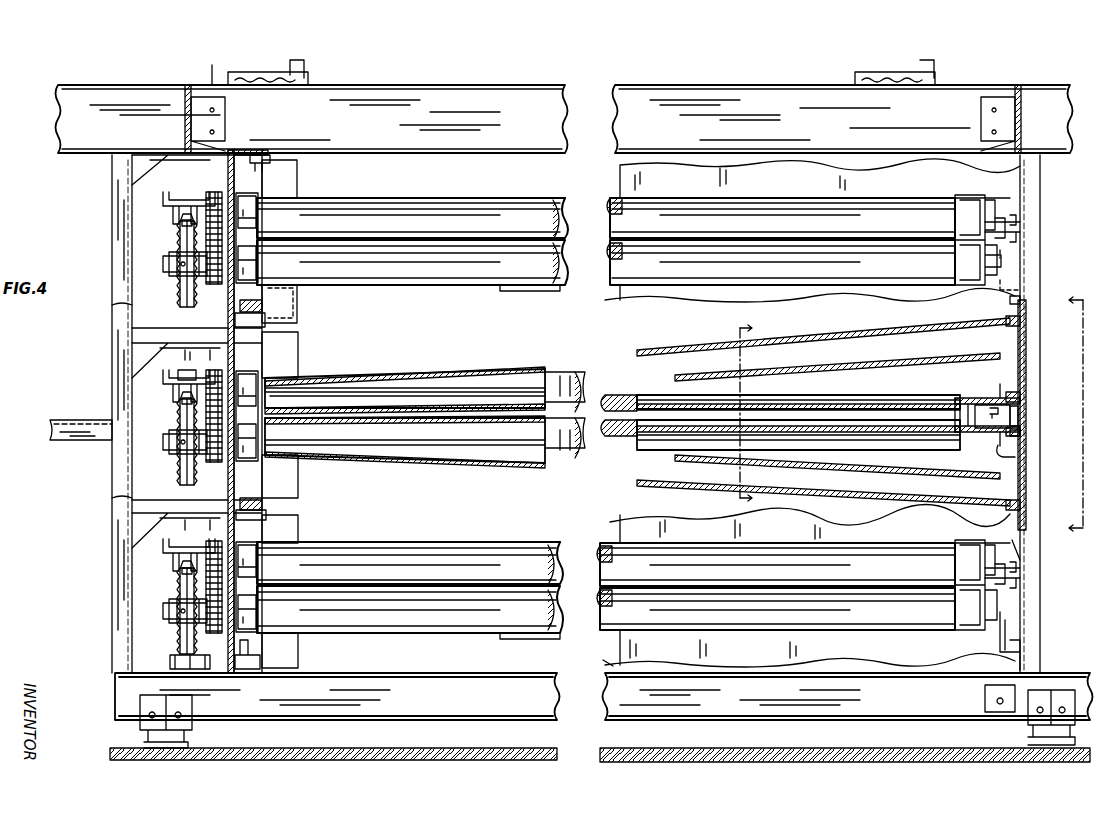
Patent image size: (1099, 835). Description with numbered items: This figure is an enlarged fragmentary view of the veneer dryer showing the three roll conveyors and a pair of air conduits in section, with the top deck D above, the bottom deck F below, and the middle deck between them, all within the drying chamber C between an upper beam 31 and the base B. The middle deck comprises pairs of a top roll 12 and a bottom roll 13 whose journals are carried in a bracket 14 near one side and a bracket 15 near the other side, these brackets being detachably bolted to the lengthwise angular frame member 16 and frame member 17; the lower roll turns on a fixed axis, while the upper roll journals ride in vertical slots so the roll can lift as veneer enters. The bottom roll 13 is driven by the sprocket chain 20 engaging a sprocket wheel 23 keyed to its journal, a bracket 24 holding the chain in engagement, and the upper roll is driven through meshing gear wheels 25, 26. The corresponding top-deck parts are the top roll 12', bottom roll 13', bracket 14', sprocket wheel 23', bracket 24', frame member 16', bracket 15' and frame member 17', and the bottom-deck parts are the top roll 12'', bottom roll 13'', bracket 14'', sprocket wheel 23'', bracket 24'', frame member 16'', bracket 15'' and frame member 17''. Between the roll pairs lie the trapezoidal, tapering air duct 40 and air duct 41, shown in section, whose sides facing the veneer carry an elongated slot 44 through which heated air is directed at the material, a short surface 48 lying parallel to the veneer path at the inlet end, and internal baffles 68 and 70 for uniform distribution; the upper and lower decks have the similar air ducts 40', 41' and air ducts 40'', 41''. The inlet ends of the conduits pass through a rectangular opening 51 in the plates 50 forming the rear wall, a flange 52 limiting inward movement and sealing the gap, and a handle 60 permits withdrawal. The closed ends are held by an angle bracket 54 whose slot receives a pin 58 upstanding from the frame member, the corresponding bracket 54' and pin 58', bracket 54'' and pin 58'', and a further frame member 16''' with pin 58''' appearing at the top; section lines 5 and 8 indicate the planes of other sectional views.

The top horizontal beam 31 is at (512, 82).
The bottom beam / base B is at (401, 725).
The drying chamber C is at (574, 495).
The conveyor D is at (435, 190).
The conveyor F is at (452, 536).
The top roll 12' is at (606, 207).
The bottom roll 13' is at (606, 252).
The air duct 40' is at (638, 180).
The air duct 41' is at (757, 298).
The angle bracket 54' is at (295, 241).
The bracket 14' is at (262, 238).
The sprocket wheel 23' is at (167, 260).
The bracket 24' is at (177, 201).
The frame member 16' is at (213, 240).
The pin 58' is at (250, 311).
The frame member 16''' is at (248, 138).
The pin 58''' is at (274, 149).
The air duct 40 is at (637, 352).
The air duct 41 is at (637, 479).
The elongated slot 44 is at (373, 387).
The top roll 12 is at (612, 390).
The bottom roll 13 is at (612, 440).
The angle bracket 54 is at (293, 415).
The pin 58 is at (280, 500).
The bracket 14 is at (251, 429).
The gear wheel 26 is at (222, 468).
The sprocket wheel 23 is at (178, 438).
The bracket 24 is at (179, 386).
The gear wheel 25 is at (198, 370).
The sprocket chain 20 is at (162, 220).
The frame member 16 is at (208, 421).
The top roll 12'' is at (606, 551).
The bottom roll 13'' is at (606, 598).
The air duct 40'' is at (633, 523).
The air duct 41'' is at (757, 648).
The angle bracket 54'' is at (303, 590).
The bracket 14'' is at (266, 587).
The sprocket wheel 23'' is at (173, 607).
The bracket 24'' is at (177, 555).
The pin 58'' is at (251, 651).
The frame member 16'' is at (253, 607).
The bracket 15' is at (974, 225).
The frame member 17' is at (1028, 229).
The plate 50 is at (1026, 288).
The rectangular opening 51 is at (1026, 303).
The flange 52 is at (1028, 322).
The section line 8 is at (1083, 412).
The baffle 68 is at (690, 374).
The baffle 70 is at (705, 460).
The section line 5 is at (753, 413).
The surface 48 is at (972, 396).
The bracket 15 is at (992, 416).
The frame member 17 is at (1032, 412).
The handle 60 is at (1008, 388).
The bracket 15'' is at (968, 593).
The frame member 17'' is at (1030, 565).